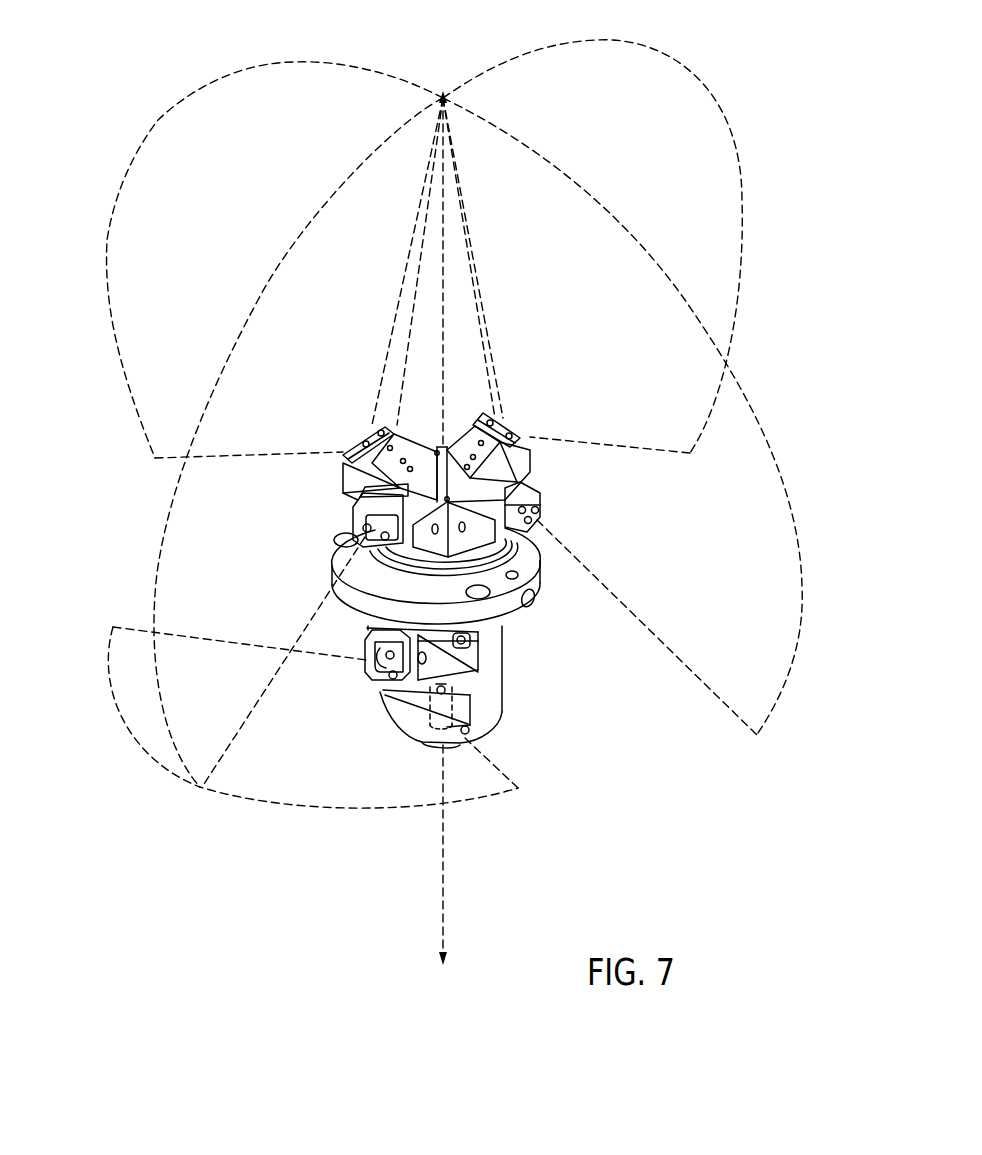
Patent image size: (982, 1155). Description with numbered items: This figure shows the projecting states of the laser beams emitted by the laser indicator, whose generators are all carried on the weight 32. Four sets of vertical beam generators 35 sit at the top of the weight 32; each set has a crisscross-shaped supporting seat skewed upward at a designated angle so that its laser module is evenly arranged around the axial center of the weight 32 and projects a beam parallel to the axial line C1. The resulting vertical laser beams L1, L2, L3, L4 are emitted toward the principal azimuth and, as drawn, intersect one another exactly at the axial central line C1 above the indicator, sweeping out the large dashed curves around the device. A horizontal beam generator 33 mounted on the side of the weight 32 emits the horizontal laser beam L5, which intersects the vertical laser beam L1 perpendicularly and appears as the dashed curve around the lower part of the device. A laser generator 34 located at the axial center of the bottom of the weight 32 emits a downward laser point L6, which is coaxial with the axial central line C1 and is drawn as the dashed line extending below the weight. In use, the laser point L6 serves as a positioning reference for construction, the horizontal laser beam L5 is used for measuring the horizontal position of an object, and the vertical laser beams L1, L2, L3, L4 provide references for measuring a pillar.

The vertical laser beam L1 is at (353, 175).
The vertical laser beam L2 is at (550, 163).
The vertical laser beam L3 is at (497, 65).
The vertical laser beam L4 is at (373, 73).
The horizontal laser beam L5 is at (273, 800).
The laser point L6 is at (442, 875).
The axial line C1 is at (443, 290).
The weight 32 is at (497, 678).
The horizontal beam generator 33 is at (358, 679).
The laser generator 34 is at (413, 723).
The vertical beam generators 35 is at (546, 474).